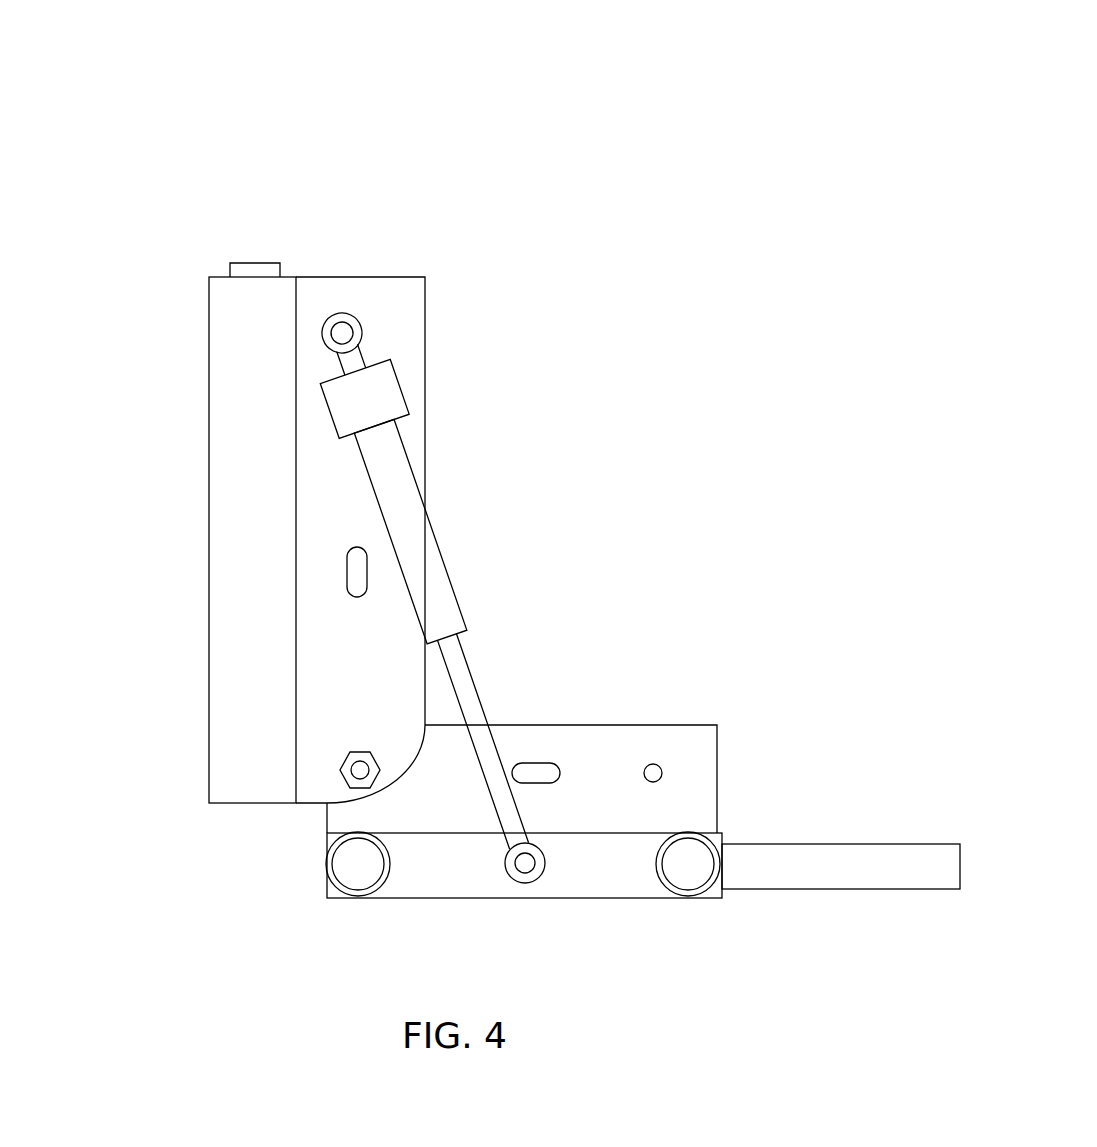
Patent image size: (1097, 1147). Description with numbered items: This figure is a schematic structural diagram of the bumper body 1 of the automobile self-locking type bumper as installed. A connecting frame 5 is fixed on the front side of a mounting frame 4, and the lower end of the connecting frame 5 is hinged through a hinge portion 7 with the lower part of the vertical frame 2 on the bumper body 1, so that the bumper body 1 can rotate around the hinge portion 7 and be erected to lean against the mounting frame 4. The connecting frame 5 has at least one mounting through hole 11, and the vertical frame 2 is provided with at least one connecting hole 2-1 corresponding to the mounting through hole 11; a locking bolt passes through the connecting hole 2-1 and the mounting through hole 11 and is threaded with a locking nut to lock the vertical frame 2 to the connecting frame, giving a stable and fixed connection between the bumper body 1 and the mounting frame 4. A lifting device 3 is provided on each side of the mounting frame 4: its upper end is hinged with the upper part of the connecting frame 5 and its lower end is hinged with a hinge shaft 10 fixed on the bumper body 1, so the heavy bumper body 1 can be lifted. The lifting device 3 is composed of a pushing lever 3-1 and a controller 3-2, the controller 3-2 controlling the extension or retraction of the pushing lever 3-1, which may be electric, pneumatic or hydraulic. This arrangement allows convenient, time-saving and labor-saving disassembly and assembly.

The bumper body 1 is at (630, 862).
The vertical frame 2 is at (619, 760).
The connecting hole 2-1 is at (538, 772).
The lifting device 3 is at (490, 429).
The pushing lever 3-1 is at (407, 513).
The controller 3-2 is at (258, 265).
The mounting frame 4 is at (262, 467).
The connecting frame 5 is at (328, 702).
The hinge portion 7 is at (355, 770).
The hinge shaft 10 is at (522, 864).
The mounting through hole 11 is at (357, 580).